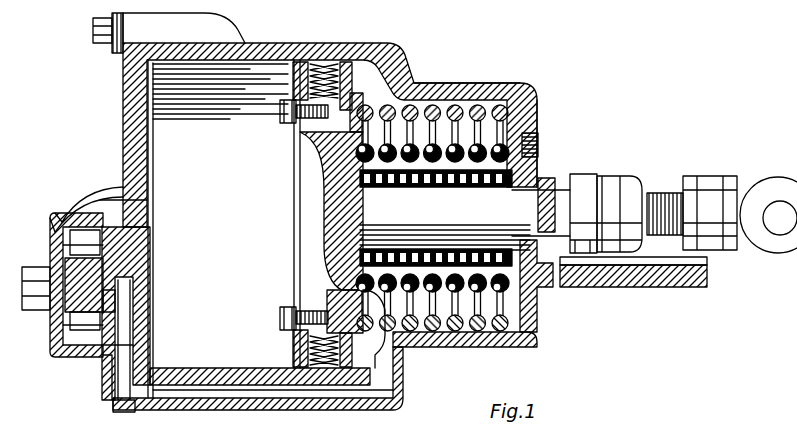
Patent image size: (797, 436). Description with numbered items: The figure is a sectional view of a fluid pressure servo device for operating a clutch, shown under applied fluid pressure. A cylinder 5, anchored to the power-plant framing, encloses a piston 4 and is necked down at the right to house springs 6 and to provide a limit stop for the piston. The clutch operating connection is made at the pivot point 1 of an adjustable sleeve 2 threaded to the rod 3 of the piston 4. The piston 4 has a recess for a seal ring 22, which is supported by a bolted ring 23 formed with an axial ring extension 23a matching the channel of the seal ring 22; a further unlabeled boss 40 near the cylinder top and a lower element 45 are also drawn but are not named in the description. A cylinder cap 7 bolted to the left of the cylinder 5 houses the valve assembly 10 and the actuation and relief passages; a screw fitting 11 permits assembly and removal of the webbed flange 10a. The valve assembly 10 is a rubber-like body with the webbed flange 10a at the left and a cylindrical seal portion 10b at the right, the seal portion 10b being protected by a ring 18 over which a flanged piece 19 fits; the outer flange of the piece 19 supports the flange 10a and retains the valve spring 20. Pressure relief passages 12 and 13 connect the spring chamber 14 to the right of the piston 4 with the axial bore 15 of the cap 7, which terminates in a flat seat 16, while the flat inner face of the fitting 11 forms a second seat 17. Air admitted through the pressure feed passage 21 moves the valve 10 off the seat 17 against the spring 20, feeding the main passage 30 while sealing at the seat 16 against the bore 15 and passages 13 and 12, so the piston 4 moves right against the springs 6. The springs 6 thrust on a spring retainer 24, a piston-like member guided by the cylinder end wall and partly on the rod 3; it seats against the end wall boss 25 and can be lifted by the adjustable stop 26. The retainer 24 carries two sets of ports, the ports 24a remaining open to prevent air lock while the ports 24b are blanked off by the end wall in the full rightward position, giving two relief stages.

The pivot point 1 is at (768, 240).
The adjustable sleeve 2 is at (740, 182).
The rod 3 is at (570, 190).
The piston 4 is at (330, 205).
The cylinder 5 is at (250, 45).
The springs 6 is at (360, 152).
The cylinder cap 7 is at (128, 115).
The valve assembly 10 is at (68, 380).
The webbed flange 10a is at (50, 352).
The cylindrical seal portion 10b is at (100, 301).
The screw fitting 11 is at (55, 212).
The pressure relief passage 12 is at (393, 385).
The pressure relief passage 13 is at (125, 405).
The spring chamber 14 is at (378, 338).
The axial bore 15 is at (112, 279).
The flat seat 16 is at (105, 321).
The second seat 17 is at (55, 235).
The ring 18 is at (105, 259).
The flanged piece 19 is at (78, 242).
The valve spring 20 is at (95, 368).
The pressure feed passage 21 is at (45, 265).
The seal ring 22 is at (322, 60).
The bolted ring 23 is at (278, 345).
The axial ring extension 23a is at (288, 100).
The spring retainer 24 is at (514, 100).
The ports 24a is at (530, 143).
The ports 24b is at (540, 285).
The end wall boss 25 is at (525, 130).
The adjustable stop 26 is at (605, 180).
The main passage 30 is at (110, 190).
The housing boss 40 is at (385, 90).
The lower spring 45 is at (332, 368).